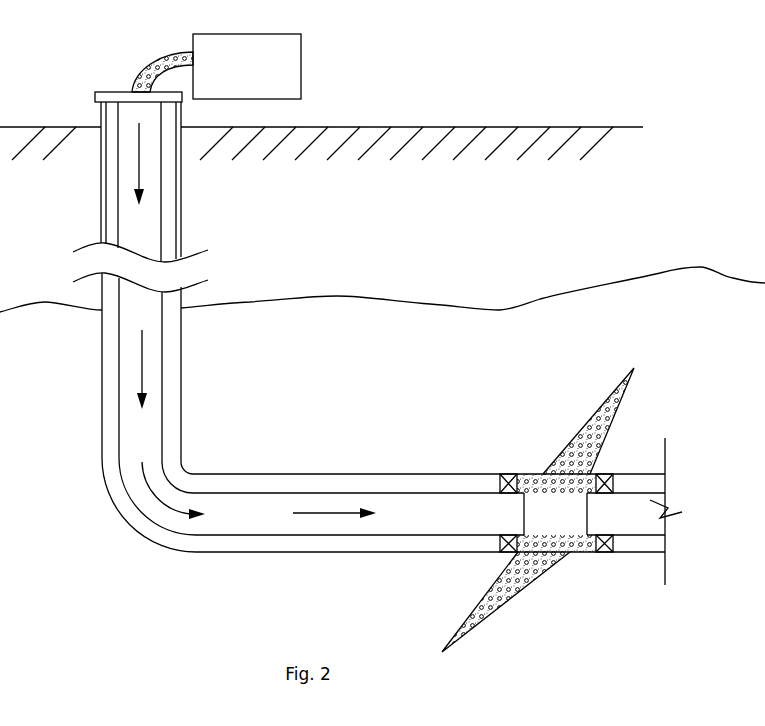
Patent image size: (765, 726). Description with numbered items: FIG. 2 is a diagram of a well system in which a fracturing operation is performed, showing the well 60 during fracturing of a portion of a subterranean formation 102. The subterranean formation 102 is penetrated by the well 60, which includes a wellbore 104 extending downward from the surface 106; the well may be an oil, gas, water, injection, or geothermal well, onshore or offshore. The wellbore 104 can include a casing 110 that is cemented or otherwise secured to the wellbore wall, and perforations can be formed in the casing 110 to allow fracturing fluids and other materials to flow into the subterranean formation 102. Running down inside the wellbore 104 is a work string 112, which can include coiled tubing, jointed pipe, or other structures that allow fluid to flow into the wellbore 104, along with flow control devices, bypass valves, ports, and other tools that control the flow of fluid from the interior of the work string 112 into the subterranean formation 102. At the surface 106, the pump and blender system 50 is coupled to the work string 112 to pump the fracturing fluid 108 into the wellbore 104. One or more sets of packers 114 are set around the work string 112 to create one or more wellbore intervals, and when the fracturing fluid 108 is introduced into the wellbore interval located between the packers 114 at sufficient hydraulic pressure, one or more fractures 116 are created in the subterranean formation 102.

The pump and blender system 50 is at (246, 81).
The well 60 is at (112, 547).
The subterranean formation 102 is at (370, 334).
The wellbore 104 is at (110, 202).
The surface 106 is at (470, 126).
The fracturing fluid 108 is at (145, 68).
The casing 110 is at (104, 232).
The work string 112 is at (120, 405).
The packers 114 is at (510, 473).
The fractures 116 is at (572, 420).